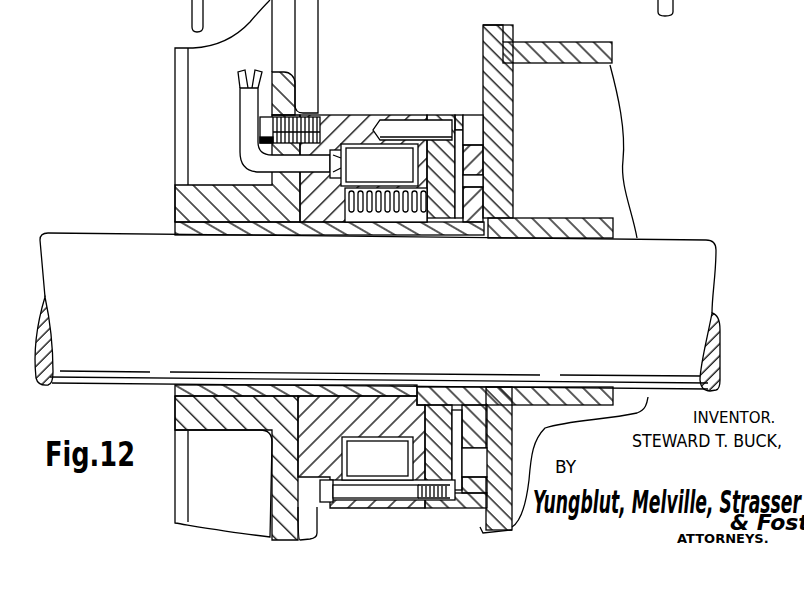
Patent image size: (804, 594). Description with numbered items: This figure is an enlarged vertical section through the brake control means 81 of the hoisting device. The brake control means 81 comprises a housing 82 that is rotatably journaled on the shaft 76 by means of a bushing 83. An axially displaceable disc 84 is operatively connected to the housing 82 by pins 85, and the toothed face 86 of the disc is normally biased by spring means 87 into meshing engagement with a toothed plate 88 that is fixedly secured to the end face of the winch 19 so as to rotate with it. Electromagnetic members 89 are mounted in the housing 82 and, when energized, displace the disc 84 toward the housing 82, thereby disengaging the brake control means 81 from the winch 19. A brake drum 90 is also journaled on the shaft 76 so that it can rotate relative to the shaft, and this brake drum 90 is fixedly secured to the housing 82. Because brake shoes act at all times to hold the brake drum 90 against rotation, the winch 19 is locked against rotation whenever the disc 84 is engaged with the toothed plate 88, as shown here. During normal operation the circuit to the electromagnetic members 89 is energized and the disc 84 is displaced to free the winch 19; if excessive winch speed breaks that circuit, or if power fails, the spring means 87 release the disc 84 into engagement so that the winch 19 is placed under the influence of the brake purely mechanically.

The winch 19 is at (563, 50).
The shaft 76 is at (667, 250).
The brake control means 81 is at (376, 108).
The housing 82 is at (335, 128).
The bushing 83 is at (313, 226).
The axially displaceable disc 84 is at (437, 115).
The pins 85 is at (402, 127).
The toothed face 86 is at (459, 115).
The spring means 87 is at (362, 214).
The toothed plate 88 is at (483, 188).
The electromagnetic members 89 is at (395, 176).
The brake drum 90 is at (178, 109).